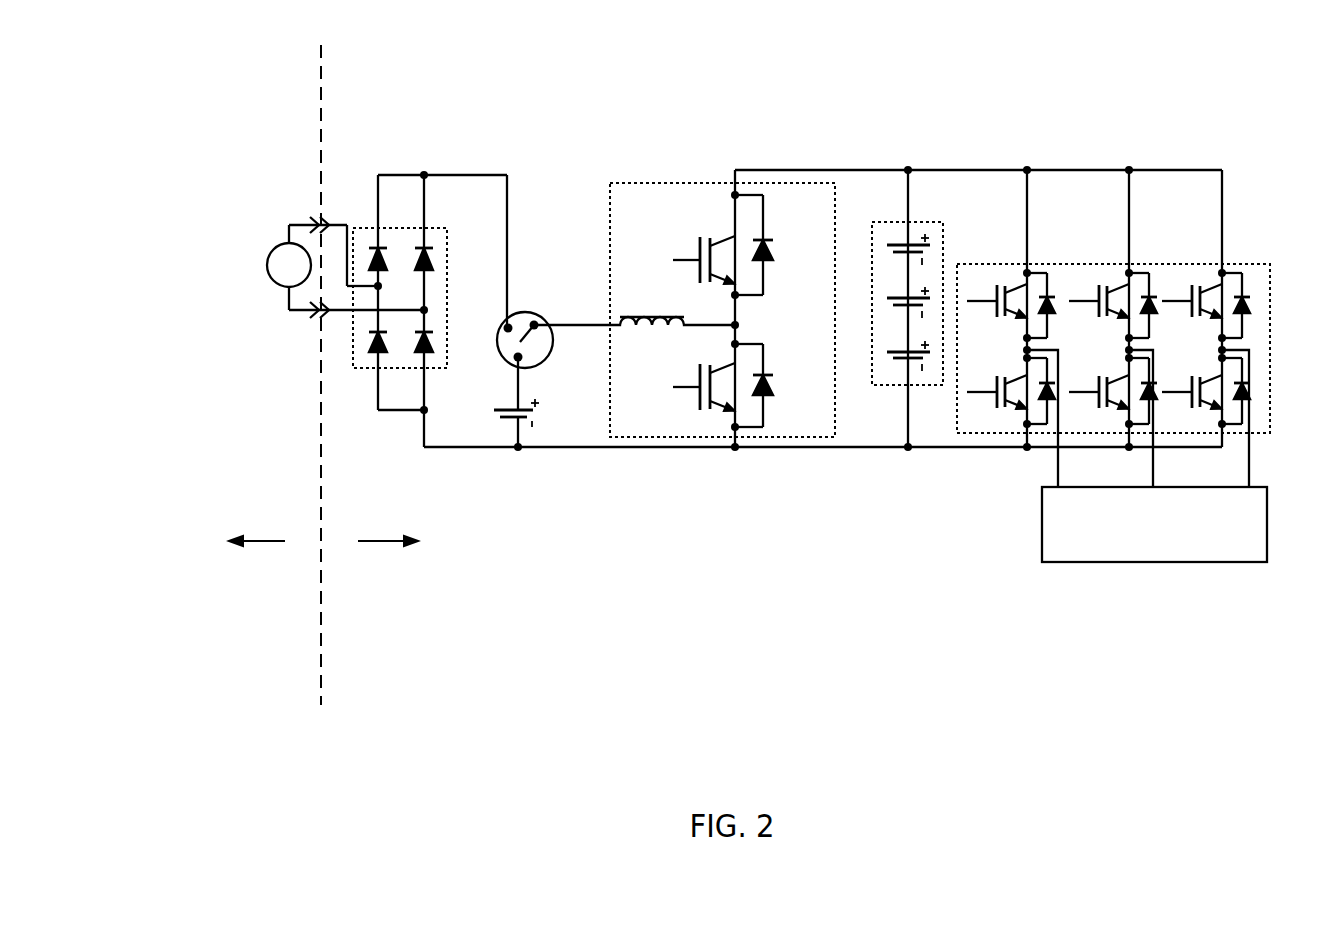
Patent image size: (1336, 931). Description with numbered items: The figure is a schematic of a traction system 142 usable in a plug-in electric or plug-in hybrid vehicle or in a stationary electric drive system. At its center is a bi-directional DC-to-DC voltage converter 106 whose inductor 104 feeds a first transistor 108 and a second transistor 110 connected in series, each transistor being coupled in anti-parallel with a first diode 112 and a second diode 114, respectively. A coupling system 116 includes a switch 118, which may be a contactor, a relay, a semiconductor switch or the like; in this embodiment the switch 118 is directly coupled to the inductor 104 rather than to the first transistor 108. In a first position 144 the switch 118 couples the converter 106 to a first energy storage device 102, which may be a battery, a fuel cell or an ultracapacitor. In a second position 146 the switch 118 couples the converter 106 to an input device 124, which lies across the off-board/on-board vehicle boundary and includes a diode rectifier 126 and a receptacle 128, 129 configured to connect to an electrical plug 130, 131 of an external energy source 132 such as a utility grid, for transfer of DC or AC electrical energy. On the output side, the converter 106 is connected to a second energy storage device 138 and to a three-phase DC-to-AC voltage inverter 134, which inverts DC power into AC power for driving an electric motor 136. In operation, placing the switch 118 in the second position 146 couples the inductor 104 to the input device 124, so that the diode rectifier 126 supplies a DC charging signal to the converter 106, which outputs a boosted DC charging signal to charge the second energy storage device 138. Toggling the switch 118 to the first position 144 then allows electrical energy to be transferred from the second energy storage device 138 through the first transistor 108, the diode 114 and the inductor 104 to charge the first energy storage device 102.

The first energy storage device 102 is at (540, 413).
The inductor 104 is at (632, 318).
The bi-directional DC-to-DC voltage converter 106 is at (722, 286).
The first transistor 108 is at (690, 258).
The second transistor 110 is at (690, 385).
The first diode 112 is at (774, 257).
The second diode 114 is at (770, 395).
The coupling system 116 is at (522, 352).
The switch 118 is at (540, 335).
The input device 124 is at (304, 393).
The diode rectifier 126 is at (446, 232).
The receptacle 128 is at (327, 219).
The receptacle 129 is at (326, 318).
The electrical plug 130 is at (316, 219).
The electrical plug 131 is at (316, 316).
The external energy source 132 is at (268, 258).
The three-phase DC-to-AC voltage inverter 134 is at (987, 264).
The electric motor 136 is at (1250, 562).
The second energy storage device 138 is at (873, 385).
The traction system 142 is at (865, 116).
The first position 144 is at (525, 358).
The second position 146 is at (510, 322).